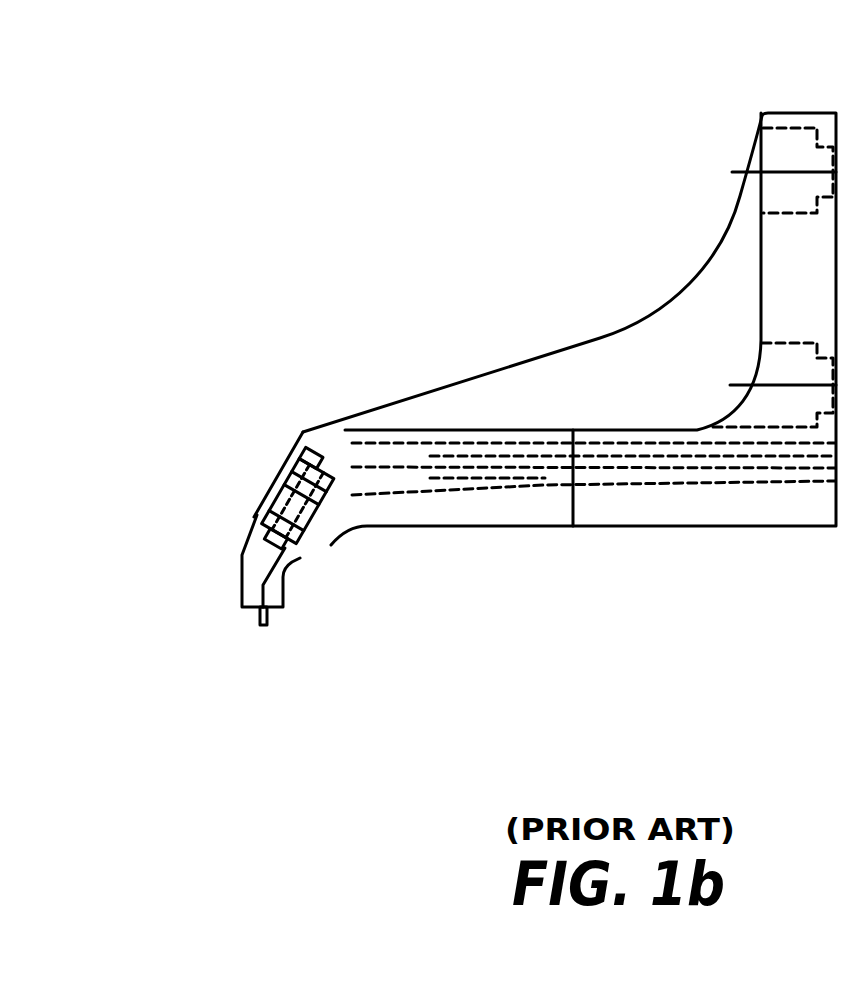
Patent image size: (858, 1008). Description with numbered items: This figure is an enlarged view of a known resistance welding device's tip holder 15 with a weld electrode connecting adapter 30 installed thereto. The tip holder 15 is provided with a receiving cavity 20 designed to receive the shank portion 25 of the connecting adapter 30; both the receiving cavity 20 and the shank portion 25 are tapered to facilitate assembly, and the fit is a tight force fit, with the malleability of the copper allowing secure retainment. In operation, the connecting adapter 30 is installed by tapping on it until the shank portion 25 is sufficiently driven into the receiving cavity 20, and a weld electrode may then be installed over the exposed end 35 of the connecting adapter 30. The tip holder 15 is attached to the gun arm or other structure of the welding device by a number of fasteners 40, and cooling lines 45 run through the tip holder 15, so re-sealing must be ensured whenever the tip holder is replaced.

The tip holder 15 is at (510, 326).
The receiving cavity 20 is at (263, 502).
The shank portion 25 is at (331, 545).
The connecting adapter 30 is at (243, 593).
The exposed end 35 is at (280, 623).
The fasteners 40 is at (780, 148).
The cooling lines 45 is at (523, 518).